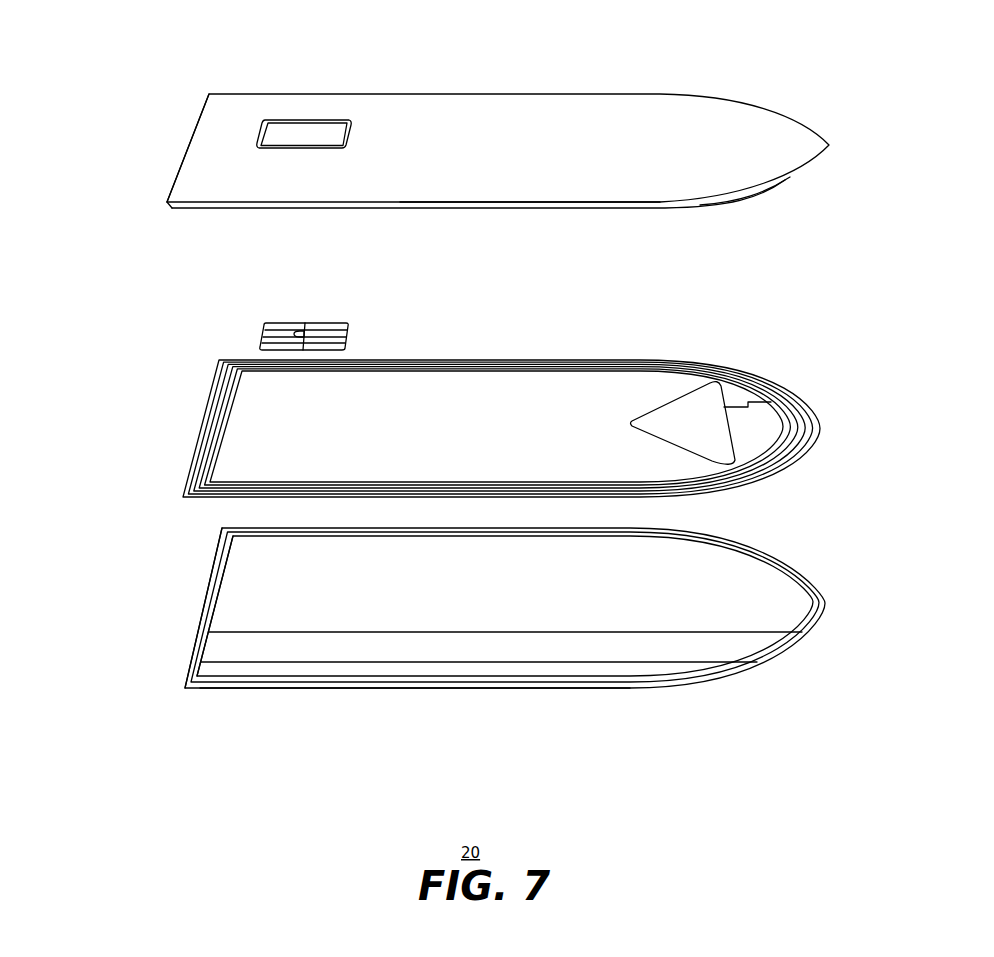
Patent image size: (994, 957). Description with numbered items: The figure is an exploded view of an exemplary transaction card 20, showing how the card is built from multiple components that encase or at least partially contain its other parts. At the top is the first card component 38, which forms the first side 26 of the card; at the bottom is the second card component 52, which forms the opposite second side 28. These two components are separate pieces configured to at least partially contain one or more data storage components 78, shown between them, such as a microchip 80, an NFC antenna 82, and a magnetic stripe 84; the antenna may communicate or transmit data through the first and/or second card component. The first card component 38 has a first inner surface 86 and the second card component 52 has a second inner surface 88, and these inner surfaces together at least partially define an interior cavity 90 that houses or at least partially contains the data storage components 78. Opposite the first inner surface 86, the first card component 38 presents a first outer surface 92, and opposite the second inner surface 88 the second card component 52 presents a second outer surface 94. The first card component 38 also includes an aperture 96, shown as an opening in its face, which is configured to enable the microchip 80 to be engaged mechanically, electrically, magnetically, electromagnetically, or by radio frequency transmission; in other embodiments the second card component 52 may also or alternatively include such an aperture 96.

The transaction card 20 is at (68, 107).
The first side 26 is at (576, 52).
The second side 28 is at (623, 728).
The first card component 38 is at (190, 146).
The second card component 52 is at (216, 553).
The data storage component 78 is at (523, 283).
The microchip 80 is at (350, 332).
The NFC antenna 82 is at (513, 360).
The magnetic stripe 84 is at (245, 648).
The first inner surface 86 is at (570, 210).
The second inner surface 88 is at (237, 613).
The interior cavity 90 is at (724, 570).
The first outer surface 92 is at (472, 117).
The second outer surface 94 is at (278, 688).
The aperture 96 is at (304, 135).